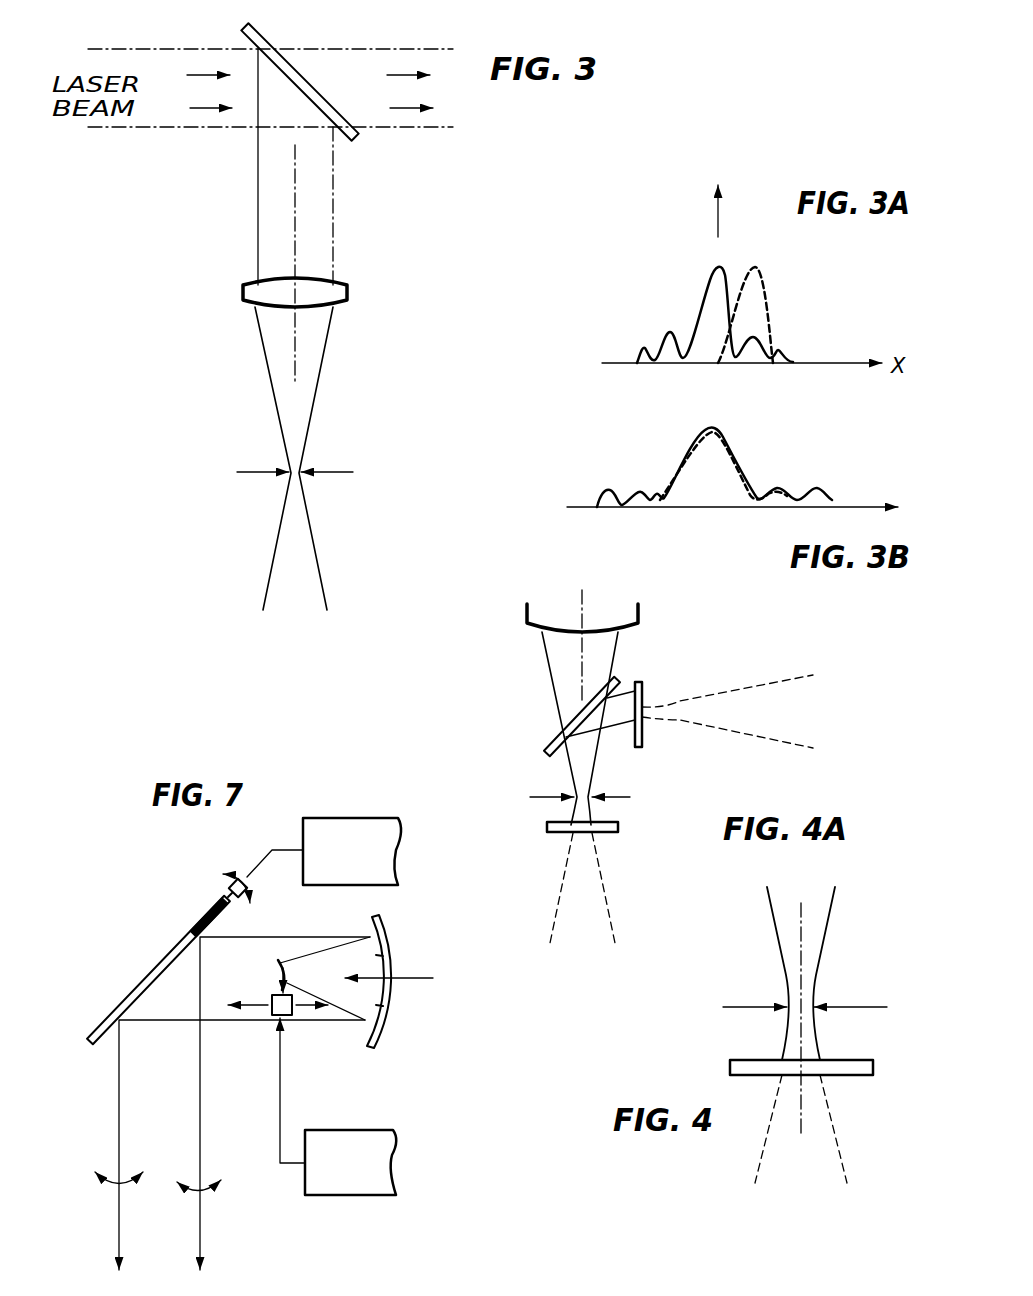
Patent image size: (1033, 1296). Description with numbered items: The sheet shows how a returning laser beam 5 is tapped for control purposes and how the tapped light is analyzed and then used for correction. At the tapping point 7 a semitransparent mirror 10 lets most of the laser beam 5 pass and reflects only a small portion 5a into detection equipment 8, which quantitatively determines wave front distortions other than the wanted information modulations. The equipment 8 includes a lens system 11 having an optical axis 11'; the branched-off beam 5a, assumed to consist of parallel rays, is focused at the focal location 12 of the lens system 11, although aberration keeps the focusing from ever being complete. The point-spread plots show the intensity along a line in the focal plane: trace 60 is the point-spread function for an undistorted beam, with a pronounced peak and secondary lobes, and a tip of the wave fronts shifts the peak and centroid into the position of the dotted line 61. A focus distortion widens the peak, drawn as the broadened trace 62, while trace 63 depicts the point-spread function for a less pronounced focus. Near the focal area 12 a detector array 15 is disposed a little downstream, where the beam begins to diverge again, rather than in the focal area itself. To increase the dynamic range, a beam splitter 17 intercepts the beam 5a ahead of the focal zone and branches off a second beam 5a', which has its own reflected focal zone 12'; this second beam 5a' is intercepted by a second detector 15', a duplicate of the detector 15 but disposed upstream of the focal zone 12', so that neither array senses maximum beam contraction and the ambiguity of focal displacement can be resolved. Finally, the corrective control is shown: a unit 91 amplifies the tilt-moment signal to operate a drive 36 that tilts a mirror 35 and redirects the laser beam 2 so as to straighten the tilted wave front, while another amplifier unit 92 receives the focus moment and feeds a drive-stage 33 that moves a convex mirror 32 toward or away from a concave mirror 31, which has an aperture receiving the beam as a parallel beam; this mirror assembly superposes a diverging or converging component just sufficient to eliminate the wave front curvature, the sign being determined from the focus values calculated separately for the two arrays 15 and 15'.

In FIG. 3, the laser beam 5 is at (146, 18).
In FIG. 3, the tapping point 7 is at (328, 38).
In FIG. 3, the semitransparent mirror 10 is at (338, 110).
In FIG. 3, the branched-off laser beam 5a is at (327, 217).
In FIG. 4A, the branched-off laser beam 5a is at (526, 673).
In FIG. 3, the lens system 11 is at (319, 285).
In FIG. 3, the optical axis 11' is at (321, 458).
In FIG. 4A, the optical axis 11' is at (610, 714).
In FIG. 4, the optical axis 11' is at (825, 973).
In FIG. 3, the detection equipment 8 is at (210, 423).
In FIG. 3, the focal location 12 is at (314, 457).
In FIG. 4A, the focal location 12 is at (607, 791).
In FIG. 4, the focal location 12 is at (814, 983).
In FIG. 3A, the trace 60 is at (728, 263).
In FIG. 3A, the dotted line 61 is at (757, 264).
In FIG. 3B, the broadened intensity distribution curve 62 is at (715, 428).
In FIG. 3B, the trace 63 is at (737, 468).
In FIG. 4A, the detector array 15 is at (603, 882).
In FIG. 4, the detector array 15 is at (812, 1121).
In FIG. 4A, the second detector 15' is at (668, 704).
In FIG. 4A, the beam splitter 17 is at (548, 754).
In FIG. 4A, the second beam 5a' is at (730, 700).
In FIG. 4A, the reflected focal zone 12' is at (688, 739).
In FIG. 7, the unit 91 is at (350, 828).
In FIG. 7, the amplifier unit 92 is at (363, 1148).
In FIG. 7, the mirror 35 is at (146, 946).
In FIG. 7, the drive 36 is at (238, 880).
In FIG. 7, the concave mirror 31 is at (380, 925).
In FIG. 7, the convex mirror 32 is at (278, 970).
In FIG. 7, the drive-stage 33 is at (270, 1000).
In FIG. 7, the laser beam 2 is at (410, 975).